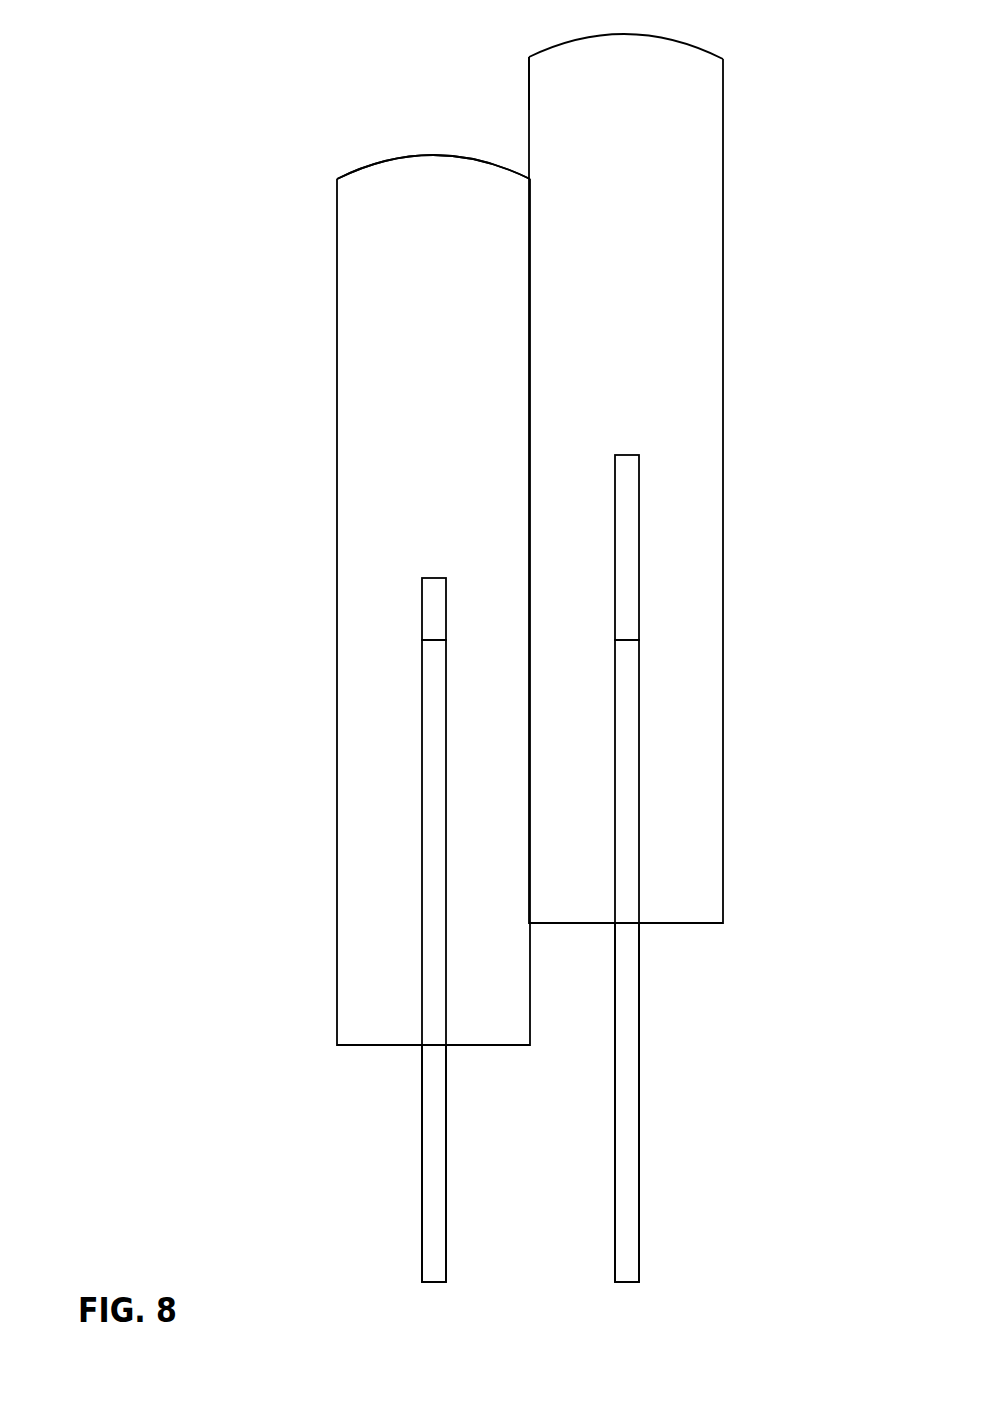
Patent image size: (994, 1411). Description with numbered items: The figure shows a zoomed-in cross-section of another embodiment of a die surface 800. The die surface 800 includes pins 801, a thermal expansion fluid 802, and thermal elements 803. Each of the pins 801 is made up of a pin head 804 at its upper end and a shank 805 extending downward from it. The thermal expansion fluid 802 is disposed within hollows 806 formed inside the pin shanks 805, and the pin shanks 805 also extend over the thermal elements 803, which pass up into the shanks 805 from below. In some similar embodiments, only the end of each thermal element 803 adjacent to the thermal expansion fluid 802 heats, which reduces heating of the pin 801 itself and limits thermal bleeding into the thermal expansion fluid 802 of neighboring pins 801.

The die surface 800 is at (136, 113).
The pins 801 is at (600, 251).
The thermal expansion fluid 802 is at (432, 590).
The thermal elements 803 is at (422, 1152).
The pin heads 804 is at (420, 155).
The shanks 805 is at (529, 110).
The hollows 806 is at (423, 836).